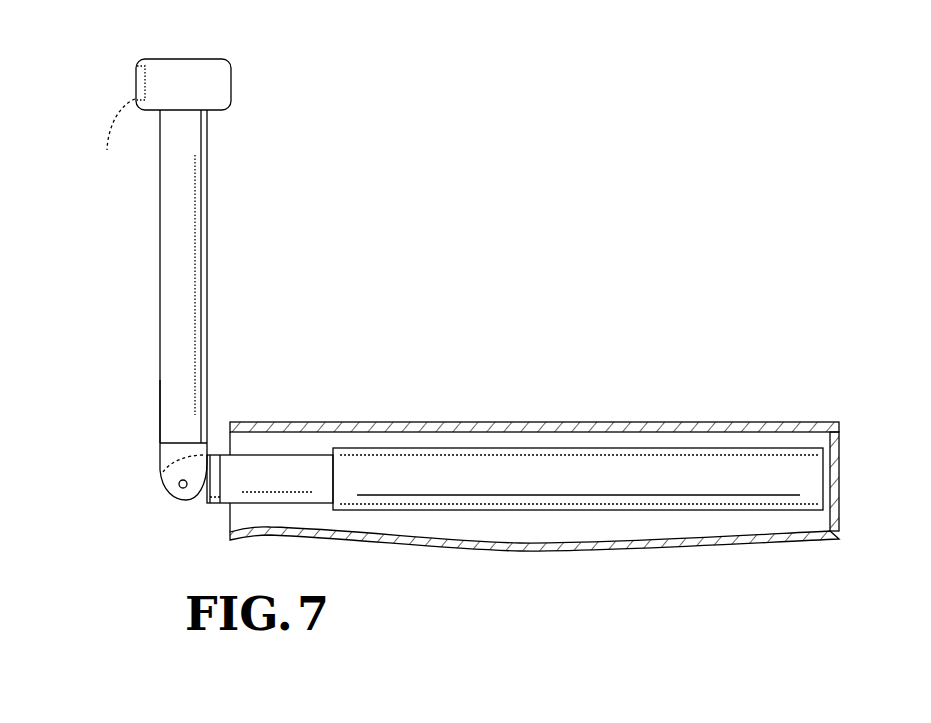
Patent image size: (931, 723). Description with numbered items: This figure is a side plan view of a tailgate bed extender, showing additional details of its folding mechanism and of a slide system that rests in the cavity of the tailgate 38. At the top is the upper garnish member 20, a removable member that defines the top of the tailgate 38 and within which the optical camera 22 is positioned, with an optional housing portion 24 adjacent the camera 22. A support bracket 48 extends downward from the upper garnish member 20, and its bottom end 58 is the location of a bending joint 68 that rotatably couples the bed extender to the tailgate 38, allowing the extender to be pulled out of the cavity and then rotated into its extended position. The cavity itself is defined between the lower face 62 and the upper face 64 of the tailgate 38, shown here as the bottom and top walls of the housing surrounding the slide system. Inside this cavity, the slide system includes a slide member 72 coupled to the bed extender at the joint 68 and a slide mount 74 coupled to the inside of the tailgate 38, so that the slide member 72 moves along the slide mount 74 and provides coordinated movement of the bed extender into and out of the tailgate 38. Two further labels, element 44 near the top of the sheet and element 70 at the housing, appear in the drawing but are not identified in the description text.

The upper garnish member 20 is at (211, 59).
The optical camera 22 is at (136, 82).
The housing portion 24 is at (115, 137).
The tailgate 38 is at (581, 0).
The connector 44 is at (768, 4).
The support bracket 48 is at (207, 237).
The bottom end of support bracket 58 is at (160, 404).
The lower face 62 is at (502, 552).
The upper face 64 is at (465, 422).
The bending joint 68 is at (178, 500).
The housing 70 is at (534, 492).
The slide member 72 is at (278, 468).
The slide mount 74 is at (651, 483).